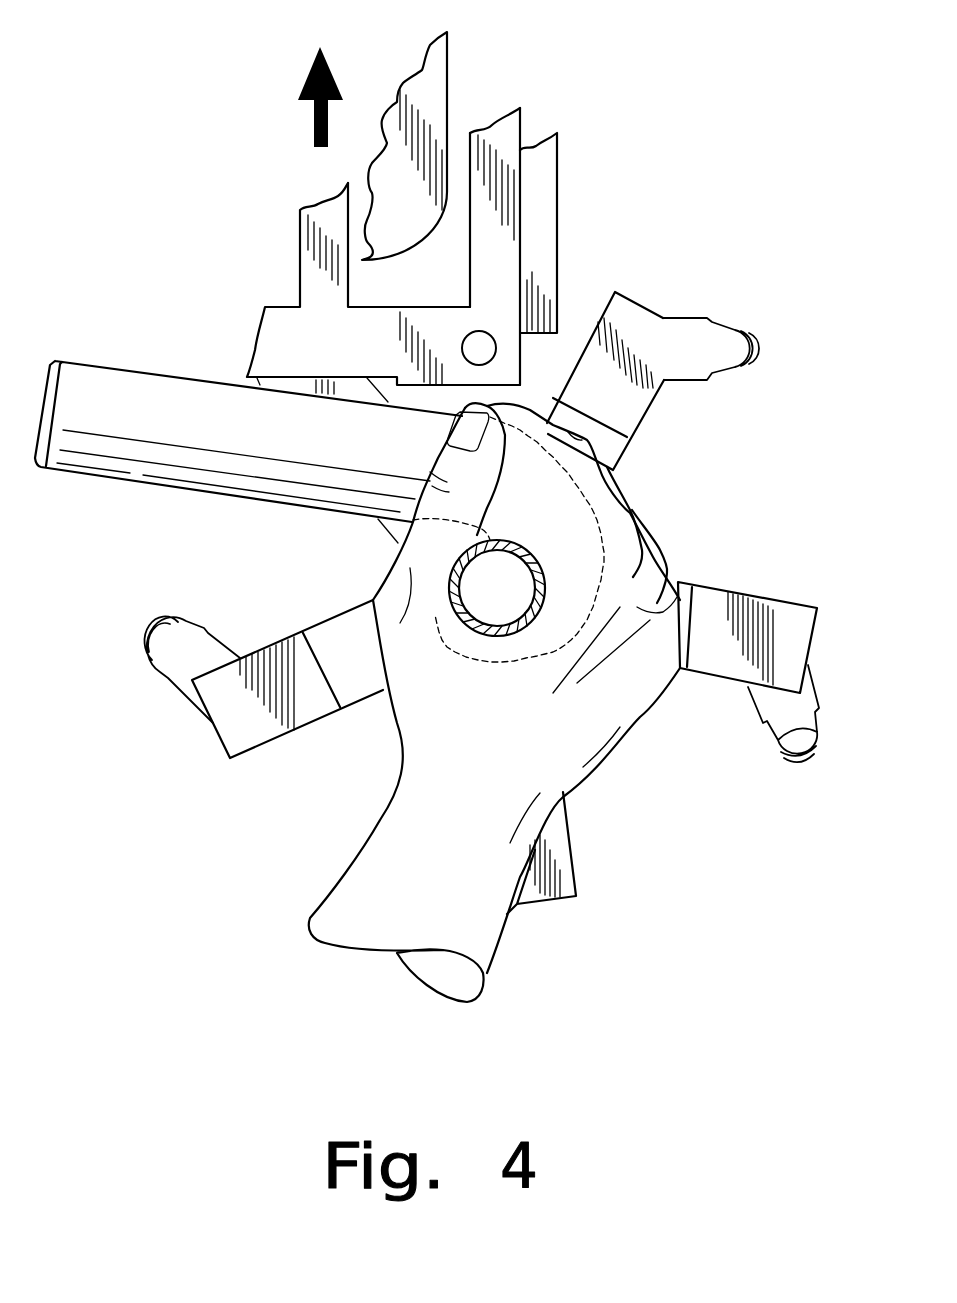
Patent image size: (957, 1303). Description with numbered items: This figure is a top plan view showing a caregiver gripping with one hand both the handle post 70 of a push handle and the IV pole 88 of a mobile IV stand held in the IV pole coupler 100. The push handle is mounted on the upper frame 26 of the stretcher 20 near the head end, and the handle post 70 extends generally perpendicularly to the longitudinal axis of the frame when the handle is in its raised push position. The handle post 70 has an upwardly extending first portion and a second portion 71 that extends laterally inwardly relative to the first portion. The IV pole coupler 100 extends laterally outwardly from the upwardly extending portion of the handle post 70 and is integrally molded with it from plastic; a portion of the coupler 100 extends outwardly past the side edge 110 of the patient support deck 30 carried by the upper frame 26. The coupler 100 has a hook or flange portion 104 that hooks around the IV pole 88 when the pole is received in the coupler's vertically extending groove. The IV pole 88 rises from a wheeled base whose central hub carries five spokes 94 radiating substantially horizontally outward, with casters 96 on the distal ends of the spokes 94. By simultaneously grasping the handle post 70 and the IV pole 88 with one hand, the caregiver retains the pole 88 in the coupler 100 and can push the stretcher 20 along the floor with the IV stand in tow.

The stretcher 20 is at (570, 213).
The upper frame 26 is at (557, 173).
The patient support deck 30 is at (437, 108).
The side edge 110 is at (450, 48).
The handle post 70 is at (113, 354).
The second portion 71 is at (135, 470).
The IV pole 88 is at (547, 583).
The spokes 94 is at (657, 383).
The casters 96 is at (770, 345).
The IV pole coupler 100 is at (585, 655).
The flange portion 104 is at (600, 586).